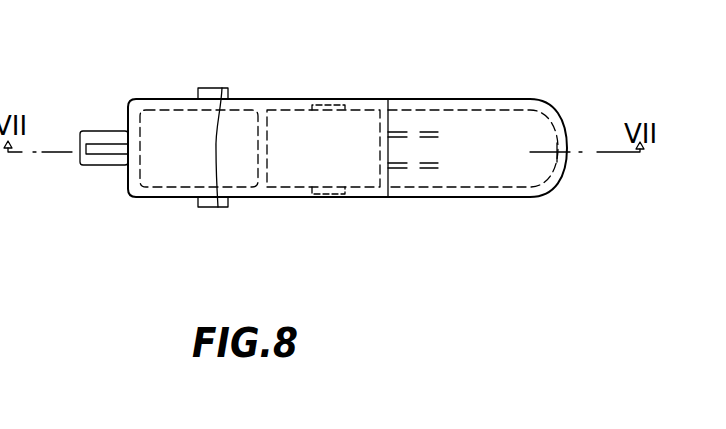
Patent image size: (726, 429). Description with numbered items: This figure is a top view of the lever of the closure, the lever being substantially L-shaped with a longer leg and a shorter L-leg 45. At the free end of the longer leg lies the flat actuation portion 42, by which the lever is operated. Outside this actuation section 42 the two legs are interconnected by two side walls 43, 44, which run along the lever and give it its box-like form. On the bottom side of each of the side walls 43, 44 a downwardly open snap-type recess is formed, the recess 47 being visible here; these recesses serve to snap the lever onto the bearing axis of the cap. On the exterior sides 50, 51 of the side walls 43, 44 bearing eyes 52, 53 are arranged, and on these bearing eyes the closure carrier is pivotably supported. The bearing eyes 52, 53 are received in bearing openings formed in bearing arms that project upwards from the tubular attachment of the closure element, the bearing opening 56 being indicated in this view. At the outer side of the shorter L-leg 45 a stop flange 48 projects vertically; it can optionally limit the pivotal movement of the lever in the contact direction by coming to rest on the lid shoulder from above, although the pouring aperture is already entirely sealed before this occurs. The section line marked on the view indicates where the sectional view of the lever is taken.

The actuation portion 42 is at (423, 118).
The side wall 43 is at (260, 99).
The side wall 44 is at (290, 197).
The shorter L-leg 45 is at (162, 163).
The snap-type recess 47 is at (337, 197).
The stop flange 48 is at (97, 131).
The exterior side 50 is at (167, 91).
The exterior side 51 is at (177, 197).
The bearing eye 52 is at (213, 88).
The bearing eye 53 is at (218, 207).
The bearing opening 56 is at (326, 105).